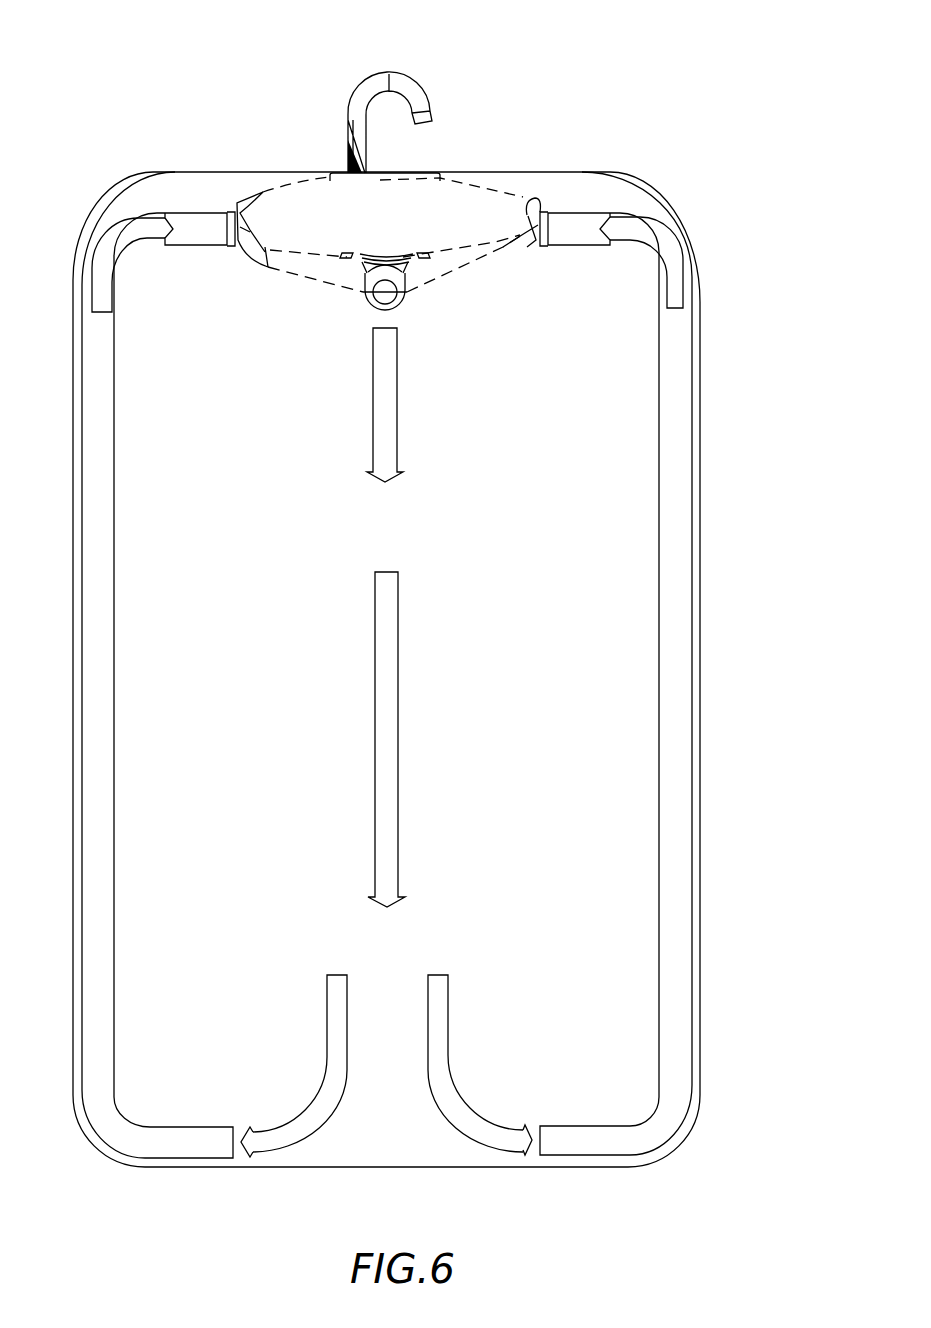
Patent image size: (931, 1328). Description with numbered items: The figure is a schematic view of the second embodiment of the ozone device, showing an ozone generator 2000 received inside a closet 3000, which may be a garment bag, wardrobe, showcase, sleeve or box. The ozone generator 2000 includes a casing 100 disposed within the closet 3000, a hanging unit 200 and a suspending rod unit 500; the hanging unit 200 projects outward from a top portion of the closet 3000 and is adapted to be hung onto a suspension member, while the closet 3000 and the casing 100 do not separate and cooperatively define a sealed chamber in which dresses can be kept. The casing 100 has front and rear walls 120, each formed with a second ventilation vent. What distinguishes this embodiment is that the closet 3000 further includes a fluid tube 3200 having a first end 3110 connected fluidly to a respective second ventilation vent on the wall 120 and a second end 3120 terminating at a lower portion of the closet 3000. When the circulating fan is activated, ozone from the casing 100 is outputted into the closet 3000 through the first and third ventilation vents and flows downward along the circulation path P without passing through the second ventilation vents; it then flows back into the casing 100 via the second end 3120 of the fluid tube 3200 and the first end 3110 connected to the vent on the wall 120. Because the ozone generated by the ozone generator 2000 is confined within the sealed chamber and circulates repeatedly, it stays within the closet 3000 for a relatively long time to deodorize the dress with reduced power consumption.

The casing 100 is at (481, 165).
The front and rear walls 120 is at (530, 200).
The hanging unit 200 is at (400, 87).
The suspending rod unit 500 is at (403, 296).
The ozone generator 2000 is at (257, 180).
The closet 3000 is at (628, 533).
The first end 3110 is at (540, 211).
The second end 3120 is at (568, 1157).
The fluid tube 3200 is at (682, 633).
The circulation path P is at (388, 753).